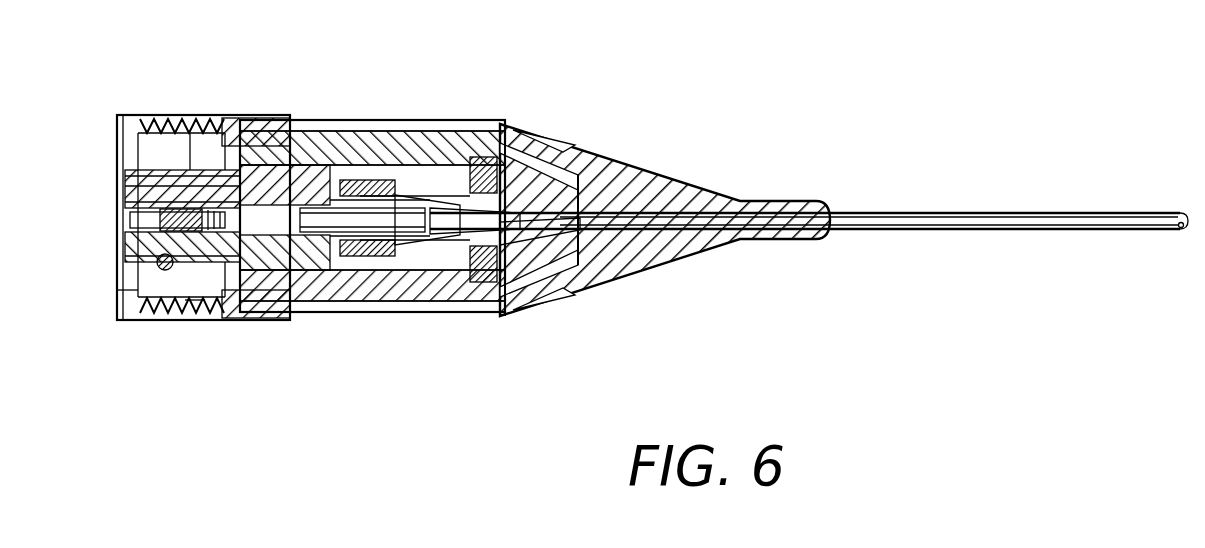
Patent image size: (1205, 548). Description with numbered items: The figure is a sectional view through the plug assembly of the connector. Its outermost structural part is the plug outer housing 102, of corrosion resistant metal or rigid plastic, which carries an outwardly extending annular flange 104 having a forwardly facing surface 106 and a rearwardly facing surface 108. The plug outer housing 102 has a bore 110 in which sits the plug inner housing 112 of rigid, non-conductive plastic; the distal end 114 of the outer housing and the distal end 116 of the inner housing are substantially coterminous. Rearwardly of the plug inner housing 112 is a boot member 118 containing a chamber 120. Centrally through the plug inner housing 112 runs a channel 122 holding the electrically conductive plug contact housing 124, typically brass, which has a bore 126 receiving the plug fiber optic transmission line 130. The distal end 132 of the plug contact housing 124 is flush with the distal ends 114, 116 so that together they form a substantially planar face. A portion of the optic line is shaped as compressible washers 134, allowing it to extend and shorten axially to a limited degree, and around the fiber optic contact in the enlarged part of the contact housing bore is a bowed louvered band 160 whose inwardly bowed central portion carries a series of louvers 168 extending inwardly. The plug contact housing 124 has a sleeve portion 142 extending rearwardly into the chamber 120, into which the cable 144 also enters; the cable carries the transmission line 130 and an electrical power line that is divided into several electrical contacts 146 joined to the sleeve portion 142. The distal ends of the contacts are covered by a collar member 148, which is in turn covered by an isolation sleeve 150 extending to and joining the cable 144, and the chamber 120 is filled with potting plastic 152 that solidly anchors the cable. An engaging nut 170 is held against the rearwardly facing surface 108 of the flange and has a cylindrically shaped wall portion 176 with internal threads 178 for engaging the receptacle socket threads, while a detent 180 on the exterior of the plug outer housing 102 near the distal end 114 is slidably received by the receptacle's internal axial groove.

The plug outer housing 102 is at (500, 160).
The annular flange 104 is at (258, 165).
The forwardly facing surface 106 is at (213, 150).
The rearwardly facing surface 108 is at (272, 150).
The bore 110 is at (418, 205).
The plug inner housing 112 is at (325, 185).
The distal end 114 is at (125, 175).
The distal end 116 is at (128, 186).
The boot member 118 is at (350, 180).
The chamber 120 is at (390, 200).
The channel 122 is at (185, 200).
The plug contact housing 124 is at (238, 200).
The bore 126 is at (245, 190).
The plug fiber optic transmission line 130 is at (323, 240).
The distal end 132 is at (130, 202).
The compressible washers 134 is at (128, 265).
The sleeve portion 142 is at (298, 265).
The cable 144 is at (445, 210).
The electrical contacts 146 is at (385, 240).
The collar member 148 is at (345, 235).
The isolation sleeve 150 is at (365, 245).
The potting plastic 152 is at (450, 305).
The bowed louvered band 160 is at (130, 222).
The louvers 168 is at (128, 250).
The engaging nut 170 is at (143, 115).
The cylindrically shaped wall portion 176 is at (140, 320).
The internal threads 178 is at (185, 322).
The detent 180 is at (193, 322).